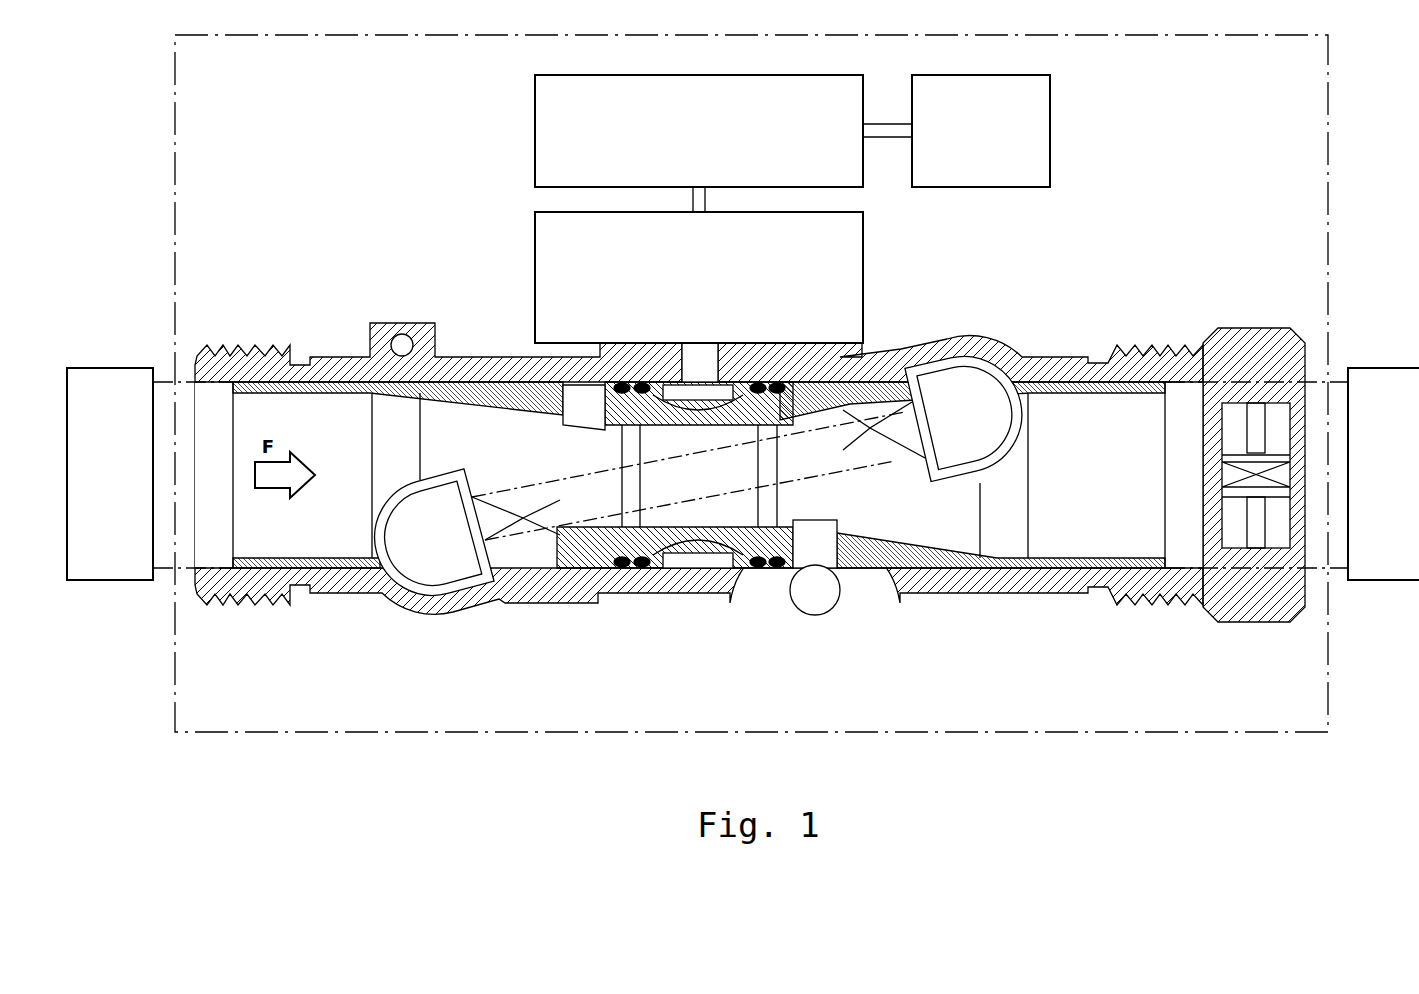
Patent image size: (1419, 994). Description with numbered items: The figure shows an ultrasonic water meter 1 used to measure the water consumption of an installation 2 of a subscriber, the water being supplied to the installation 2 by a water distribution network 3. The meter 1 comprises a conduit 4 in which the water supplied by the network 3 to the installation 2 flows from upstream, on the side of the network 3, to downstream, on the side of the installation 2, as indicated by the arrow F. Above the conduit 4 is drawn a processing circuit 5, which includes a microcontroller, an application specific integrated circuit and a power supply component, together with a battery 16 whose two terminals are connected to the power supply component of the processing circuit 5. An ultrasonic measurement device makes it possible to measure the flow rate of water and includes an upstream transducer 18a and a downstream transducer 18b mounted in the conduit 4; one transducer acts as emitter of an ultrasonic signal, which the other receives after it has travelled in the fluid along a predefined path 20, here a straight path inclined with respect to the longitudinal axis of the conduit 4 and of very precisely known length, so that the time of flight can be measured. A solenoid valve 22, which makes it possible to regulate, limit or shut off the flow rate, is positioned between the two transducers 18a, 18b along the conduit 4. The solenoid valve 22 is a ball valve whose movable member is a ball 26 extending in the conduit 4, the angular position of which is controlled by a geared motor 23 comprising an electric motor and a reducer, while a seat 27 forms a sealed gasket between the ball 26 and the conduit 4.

The ultrasonic water meter 1 is at (1328, 155).
The installation 2 is at (1383, 474).
The water distribution network 3 is at (110, 474).
The conduit 4 is at (1100, 410).
The processing circuit 5 is at (699, 131).
The battery 16 is at (981, 131).
The upstream transducer 18a is at (448, 575).
The downstream transducer 18b is at (975, 377).
The predefined path 20 is at (557, 478).
The solenoid valve 22 is at (882, 340).
The geared motor 23 is at (699, 277).
The ball 26 is at (665, 378).
The seat 27 is at (800, 520).